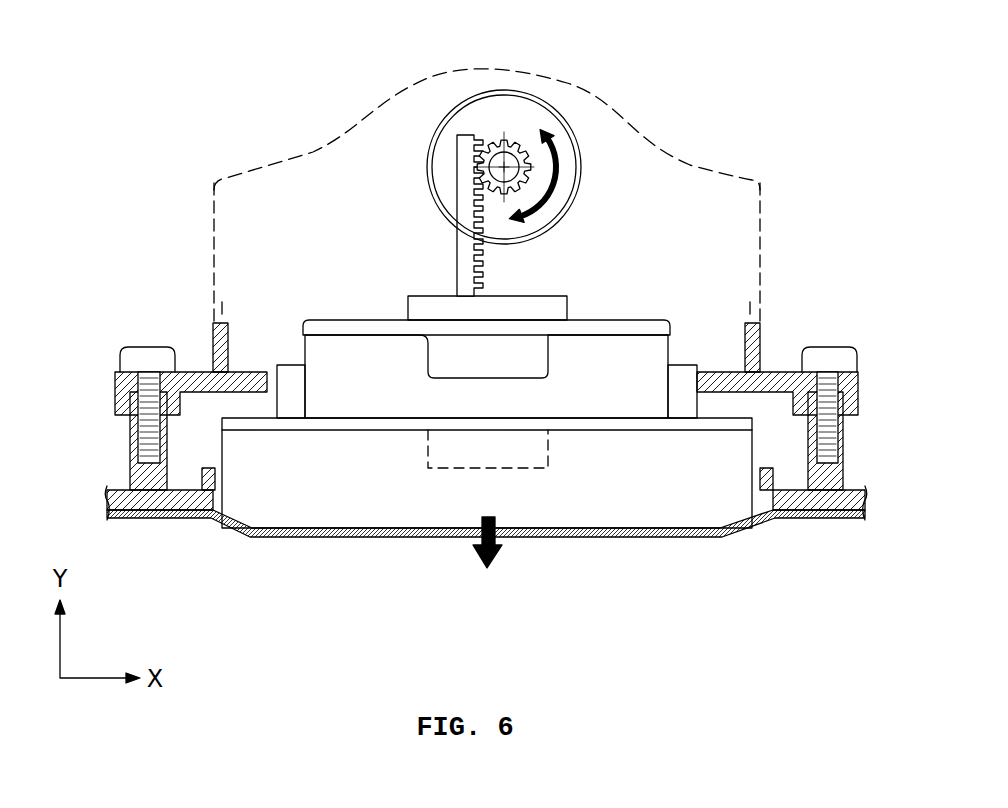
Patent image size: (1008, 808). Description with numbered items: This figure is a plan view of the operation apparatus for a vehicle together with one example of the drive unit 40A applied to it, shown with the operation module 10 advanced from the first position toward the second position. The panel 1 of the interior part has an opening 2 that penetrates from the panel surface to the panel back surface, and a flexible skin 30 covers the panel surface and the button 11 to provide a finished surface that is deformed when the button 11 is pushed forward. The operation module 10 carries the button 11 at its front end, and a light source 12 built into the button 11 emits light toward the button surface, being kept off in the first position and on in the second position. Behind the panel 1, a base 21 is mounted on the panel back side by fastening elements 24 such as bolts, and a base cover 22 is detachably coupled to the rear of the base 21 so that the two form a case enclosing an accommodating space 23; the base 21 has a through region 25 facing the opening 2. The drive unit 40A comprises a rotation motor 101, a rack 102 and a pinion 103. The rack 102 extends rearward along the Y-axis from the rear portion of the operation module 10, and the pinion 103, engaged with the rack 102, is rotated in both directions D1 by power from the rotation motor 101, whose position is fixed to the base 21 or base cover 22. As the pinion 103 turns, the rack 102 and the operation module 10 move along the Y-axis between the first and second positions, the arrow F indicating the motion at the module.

The panel 1 is at (830, 505).
The opening 2 is at (215, 489).
The operation module 10 is at (692, 321).
The button 11 is at (380, 512).
The light source 12 is at (532, 467).
The base 21 is at (215, 324).
The base cover 22 is at (214, 222).
The accommodating space 23 is at (672, 197).
The fastening element 24 is at (837, 352).
The through region 25 is at (278, 383).
The skin 30 is at (695, 537).
The drive unit 40A is at (418, 124).
The rotation motor 101 is at (505, 105).
The rack 102 is at (463, 137).
The pinion 103 is at (517, 140).
The rotation directions D1 is at (552, 197).
The force direction F is at (483, 560).